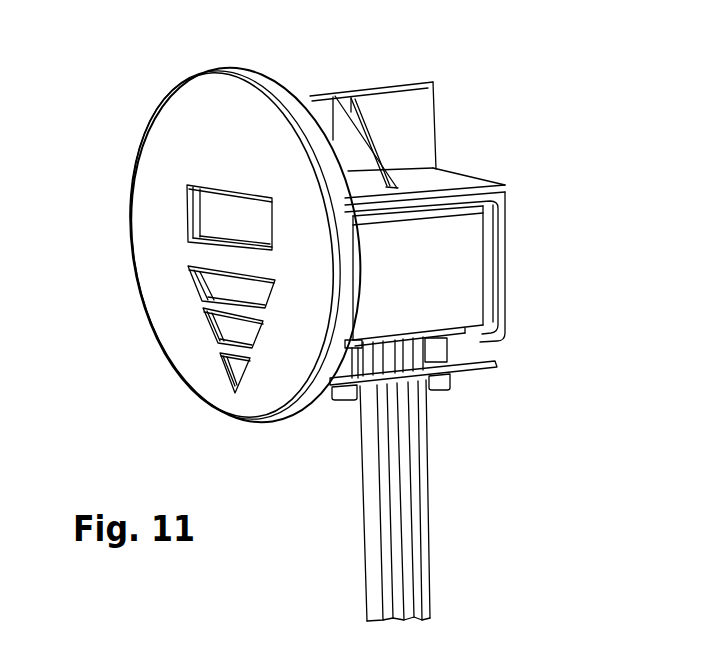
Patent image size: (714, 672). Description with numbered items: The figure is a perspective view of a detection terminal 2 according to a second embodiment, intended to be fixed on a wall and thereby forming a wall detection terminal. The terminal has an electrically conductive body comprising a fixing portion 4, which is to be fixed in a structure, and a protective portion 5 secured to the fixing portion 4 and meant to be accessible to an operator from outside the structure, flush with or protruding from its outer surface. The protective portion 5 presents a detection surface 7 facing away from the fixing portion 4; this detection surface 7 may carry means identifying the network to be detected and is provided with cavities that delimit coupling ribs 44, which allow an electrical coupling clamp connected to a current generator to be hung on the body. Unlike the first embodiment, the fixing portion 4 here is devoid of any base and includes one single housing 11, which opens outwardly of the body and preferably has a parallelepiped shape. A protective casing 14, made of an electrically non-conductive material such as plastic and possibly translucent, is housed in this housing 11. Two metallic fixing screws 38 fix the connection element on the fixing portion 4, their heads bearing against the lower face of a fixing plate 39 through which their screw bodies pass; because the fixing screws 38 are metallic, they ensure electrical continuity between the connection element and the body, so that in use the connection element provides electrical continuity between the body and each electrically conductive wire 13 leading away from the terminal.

The detection terminal 2 is at (499, 146).
The fixing portion 4 is at (393, 108).
The protective portion 5 is at (251, 72).
The detection surface 7 is at (150, 267).
The housing 11 is at (495, 198).
The electrically conductive wires 13 is at (388, 585).
The protective casing 14 is at (460, 283).
The fixing screws 38 is at (351, 396).
The fixing plate 39 is at (481, 378).
The coupling ribs 44 is at (210, 257).